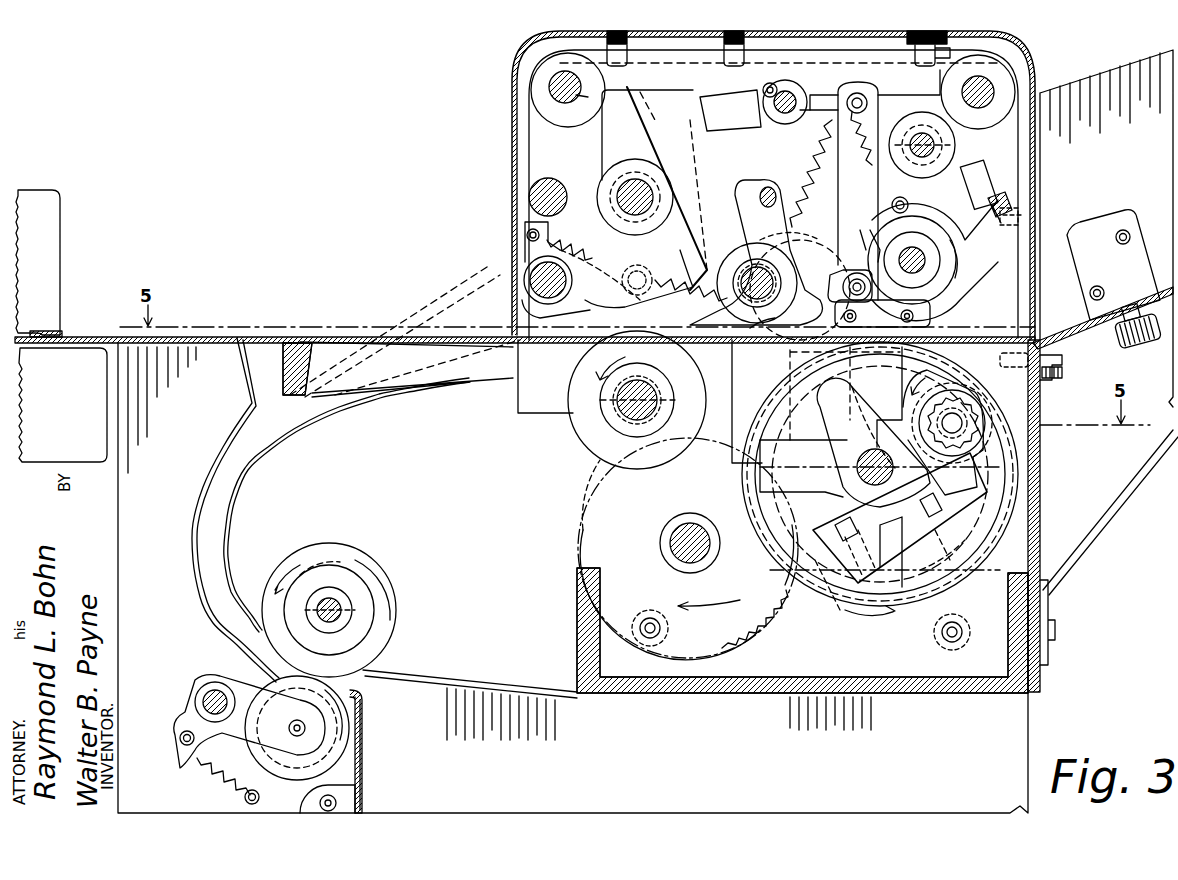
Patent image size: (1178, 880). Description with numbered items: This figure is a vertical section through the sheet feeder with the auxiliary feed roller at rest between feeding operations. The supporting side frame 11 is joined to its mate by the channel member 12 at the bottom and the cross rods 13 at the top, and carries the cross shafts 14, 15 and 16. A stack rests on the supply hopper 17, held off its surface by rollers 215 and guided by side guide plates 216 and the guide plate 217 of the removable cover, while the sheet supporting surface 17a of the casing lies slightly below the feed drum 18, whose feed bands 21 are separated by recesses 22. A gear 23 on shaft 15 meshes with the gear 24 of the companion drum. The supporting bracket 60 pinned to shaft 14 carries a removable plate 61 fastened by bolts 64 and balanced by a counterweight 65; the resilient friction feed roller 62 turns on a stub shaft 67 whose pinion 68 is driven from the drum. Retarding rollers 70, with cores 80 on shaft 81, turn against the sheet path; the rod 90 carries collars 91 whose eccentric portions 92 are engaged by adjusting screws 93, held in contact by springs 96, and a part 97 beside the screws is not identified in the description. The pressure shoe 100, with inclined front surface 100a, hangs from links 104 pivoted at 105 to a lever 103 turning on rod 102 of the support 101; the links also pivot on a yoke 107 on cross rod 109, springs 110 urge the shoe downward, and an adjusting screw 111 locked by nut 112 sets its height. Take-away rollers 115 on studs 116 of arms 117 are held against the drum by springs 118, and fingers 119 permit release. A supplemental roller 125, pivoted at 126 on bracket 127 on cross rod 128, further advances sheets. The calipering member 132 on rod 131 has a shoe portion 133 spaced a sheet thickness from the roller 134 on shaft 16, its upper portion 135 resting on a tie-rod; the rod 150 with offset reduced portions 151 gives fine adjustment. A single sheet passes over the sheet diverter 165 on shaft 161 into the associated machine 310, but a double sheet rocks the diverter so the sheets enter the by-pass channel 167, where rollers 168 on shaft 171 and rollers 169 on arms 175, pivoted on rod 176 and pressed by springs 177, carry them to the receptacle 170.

The supporting side frame 11 is at (522, 122).
The channel member 12 is at (945, 680).
The cross rods 13 is at (552, 80).
The cross shaft 14 is at (880, 450).
The cross shaft 15 is at (693, 525).
The cross shaft 16 is at (648, 390).
The supply hopper 17 is at (1065, 340).
The sheet supporting surface 17a is at (1030, 335).
The feed member 18 is at (1010, 522).
The feed band portions 21 is at (940, 590).
The recesses 22 is at (945, 630).
The gear 23 is at (688, 549).
The gear 24 is at (845, 380).
The supporting bracket 60 is at (840, 508).
The removable plate 61 is at (1030, 472).
The auxiliary friction feed roller 62 is at (1040, 405).
The bolts 64 is at (870, 570).
The counterweight 65 is at (873, 442).
The stub shaft 67 is at (965, 395).
The pinion 68 is at (1000, 360).
The retarding roller means 70 is at (940, 210).
The cores 80 is at (945, 218).
The shaft 81 is at (912, 256).
The rod 90 is at (923, 125).
The collars 91 is at (990, 105).
The eccentric portions 92 is at (910, 132).
The adjusting screws 93 is at (1006, 195).
The spring 96 is at (870, 185).
The knob 97 is at (996, 180).
The pressure shoe 100 is at (935, 312).
The front surface 100a is at (940, 322).
The supporting member 101 is at (792, 92).
The rod 102 is at (780, 118).
The lever 103 is at (730, 110).
The links 104 is at (870, 238).
The pivot stud 105 is at (866, 100).
The yoke member 107 is at (845, 287).
The cross rod 109 is at (796, 316).
The springs 110 is at (807, 173).
The adjusting screw 111 is at (766, 92).
The nut 112 is at (740, 42).
The take-away rollers 115 is at (838, 262).
The studs 116 is at (772, 290).
The arms 117 is at (752, 205).
The springs 118 is at (745, 268).
The finger portion 119 is at (768, 186).
The roller 125 is at (580, 340).
The pivot 126 is at (660, 268).
The supporting bracket 127 is at (546, 302).
The cross rod 128 is at (522, 262).
The rod 131 is at (612, 190).
The calipering member 132 is at (605, 112).
The shoe portion 133 is at (722, 343).
The roller 134 is at (600, 445).
The upper portion 135 is at (570, 107).
The rod 150 is at (552, 178).
The reduced portions 151 is at (528, 184).
The shaft 161 is at (295, 340).
The sheet diverter 165 is at (430, 372).
The by-pass channel 167 is at (250, 462).
The roller 168 is at (395, 612).
The roller 169 is at (350, 722).
The receptacle 170 is at (438, 741).
The shaft 171 is at (330, 595).
The arm 175 is at (182, 715).
The rod 176 is at (212, 690).
The spring 177 is at (210, 770).
The rollers 215 is at (1145, 360).
The side guide plates 216 is at (1106, 228).
The guide plate 217 is at (1040, 235).
The associated machine 310 is at (61, 326).